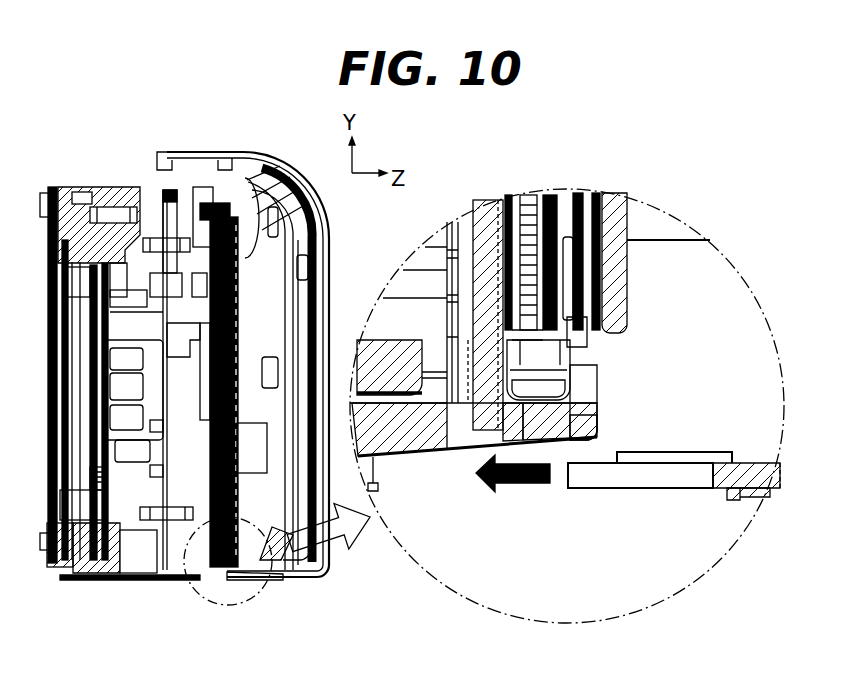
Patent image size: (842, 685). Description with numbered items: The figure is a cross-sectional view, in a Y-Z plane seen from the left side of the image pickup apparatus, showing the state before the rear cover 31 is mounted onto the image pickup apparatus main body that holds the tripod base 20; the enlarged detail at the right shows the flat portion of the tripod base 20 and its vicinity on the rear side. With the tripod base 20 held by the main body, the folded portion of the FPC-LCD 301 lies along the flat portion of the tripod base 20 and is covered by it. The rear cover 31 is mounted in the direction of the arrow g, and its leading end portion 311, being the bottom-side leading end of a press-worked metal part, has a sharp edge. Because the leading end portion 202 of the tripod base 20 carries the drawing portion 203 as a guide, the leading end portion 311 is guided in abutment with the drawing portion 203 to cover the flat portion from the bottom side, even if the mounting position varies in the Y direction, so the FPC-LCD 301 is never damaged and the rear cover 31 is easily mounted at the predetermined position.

The tripod base 20 is at (398, 457).
The FPC-LCD 301 is at (566, 396).
The leading end portion of the tripod base 202 is at (593, 420).
The drawing portion 203 is at (583, 447).
The arrow indicating mounting direction g is at (480, 478).
The rear cover 31 is at (643, 477).
The leading end portion of the rear cover 311 is at (568, 488).